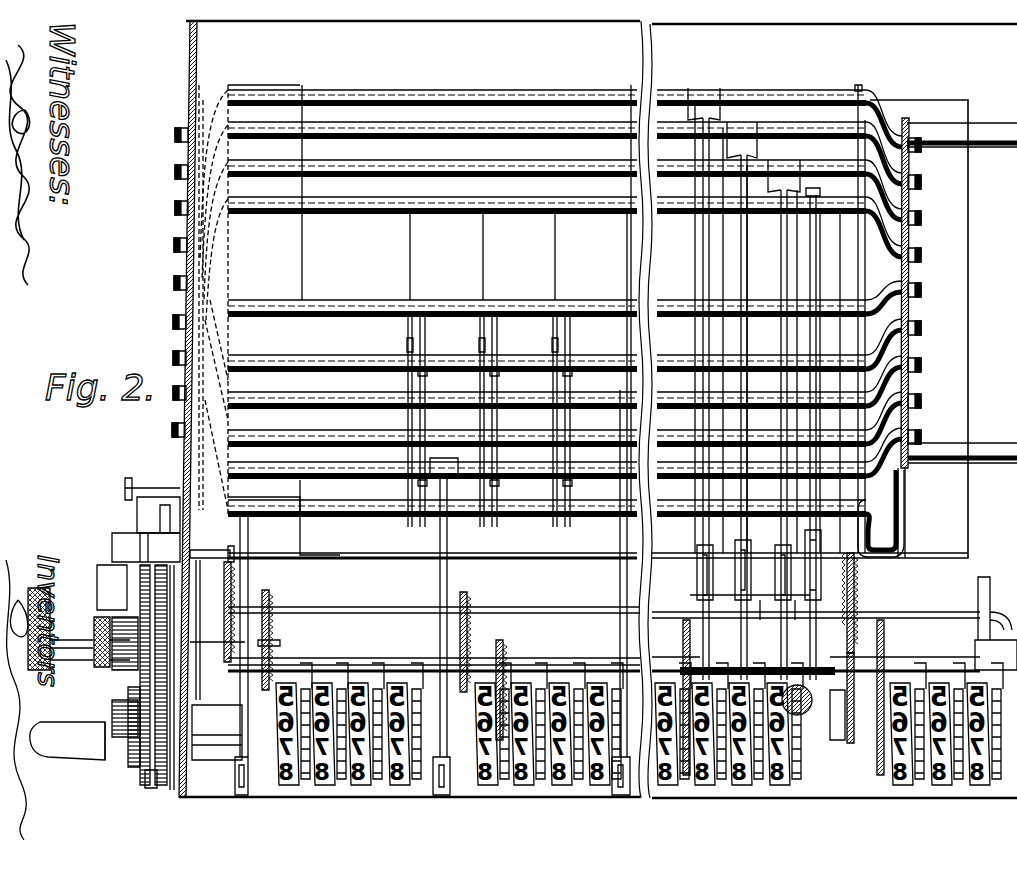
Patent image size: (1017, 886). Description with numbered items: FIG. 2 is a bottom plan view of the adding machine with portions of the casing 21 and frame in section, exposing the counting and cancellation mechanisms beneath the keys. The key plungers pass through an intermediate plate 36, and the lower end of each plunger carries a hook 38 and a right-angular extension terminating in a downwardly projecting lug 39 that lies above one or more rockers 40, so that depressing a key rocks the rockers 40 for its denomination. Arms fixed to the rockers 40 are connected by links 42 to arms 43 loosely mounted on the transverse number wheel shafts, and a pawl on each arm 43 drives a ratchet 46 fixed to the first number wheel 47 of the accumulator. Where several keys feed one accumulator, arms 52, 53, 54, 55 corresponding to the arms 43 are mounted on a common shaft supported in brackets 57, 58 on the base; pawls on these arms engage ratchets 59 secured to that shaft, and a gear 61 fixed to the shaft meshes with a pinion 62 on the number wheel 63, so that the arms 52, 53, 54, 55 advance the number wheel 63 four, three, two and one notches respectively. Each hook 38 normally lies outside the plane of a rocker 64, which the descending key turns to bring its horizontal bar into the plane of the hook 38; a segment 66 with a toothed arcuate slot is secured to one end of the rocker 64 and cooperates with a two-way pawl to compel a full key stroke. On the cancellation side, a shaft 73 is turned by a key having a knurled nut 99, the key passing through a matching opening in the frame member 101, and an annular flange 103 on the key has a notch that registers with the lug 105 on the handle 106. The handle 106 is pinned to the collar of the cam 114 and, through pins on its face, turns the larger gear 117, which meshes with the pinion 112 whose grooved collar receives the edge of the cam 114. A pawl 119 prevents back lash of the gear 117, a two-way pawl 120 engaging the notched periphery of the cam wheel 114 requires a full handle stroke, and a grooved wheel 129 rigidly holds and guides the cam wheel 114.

The inclosing casing 21 is at (935, 27).
The intermediate plate 36 is at (968, 268).
The hook 38 is at (413, 331).
The downwardly projecting lug 39 is at (426, 380).
The rockers 40 is at (458, 208).
The links 42 is at (248, 547).
The arms 43 is at (235, 777).
The ratchet 46 is at (270, 700).
The first number wheel 47 is at (290, 685).
The arm 52 is at (824, 434).
The arm 53 is at (784, 610).
The arm 54 is at (741, 605).
The arm 55 is at (696, 615).
The bracket 57 is at (683, 640).
The bracket 58 is at (884, 642).
The ratchets 59 is at (788, 650).
The gear 61 is at (855, 576).
The pinion 62 is at (830, 745).
The number wheel 63 is at (867, 773).
The rocker 64 is at (362, 300).
The segment 66 is at (197, 232).
The shaft 73 is at (418, 680).
The knurled nut 99 is at (69, 637).
The frame member 101 is at (189, 470).
The annular flange 103 is at (112, 549).
The lug 105 is at (100, 718).
The handle 106 is at (120, 702).
The pinion 112 is at (128, 760).
The cam 114 is at (112, 593).
The larger gear 117 is at (112, 610).
The pawl 119 is at (137, 521).
The two-way pawl 120 is at (222, 552).
The grooved wheel 129 is at (146, 780).